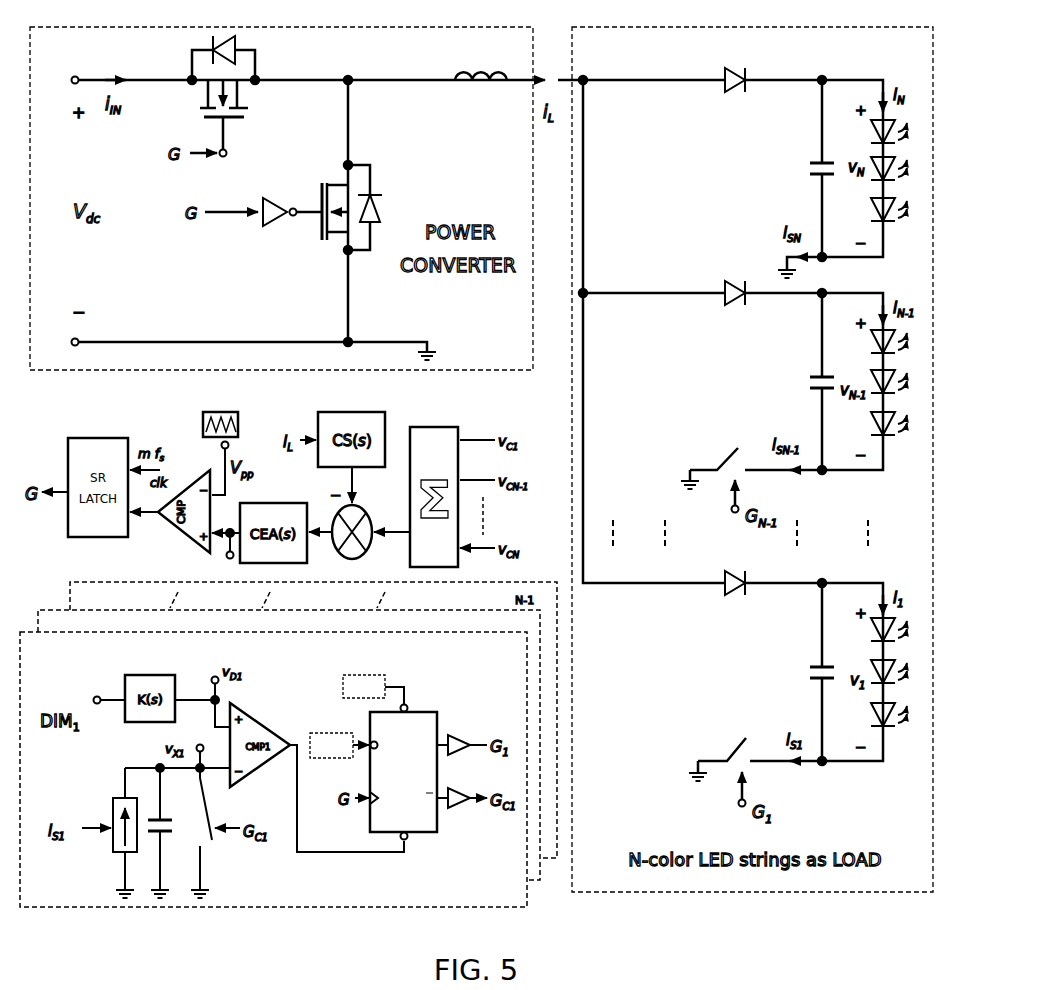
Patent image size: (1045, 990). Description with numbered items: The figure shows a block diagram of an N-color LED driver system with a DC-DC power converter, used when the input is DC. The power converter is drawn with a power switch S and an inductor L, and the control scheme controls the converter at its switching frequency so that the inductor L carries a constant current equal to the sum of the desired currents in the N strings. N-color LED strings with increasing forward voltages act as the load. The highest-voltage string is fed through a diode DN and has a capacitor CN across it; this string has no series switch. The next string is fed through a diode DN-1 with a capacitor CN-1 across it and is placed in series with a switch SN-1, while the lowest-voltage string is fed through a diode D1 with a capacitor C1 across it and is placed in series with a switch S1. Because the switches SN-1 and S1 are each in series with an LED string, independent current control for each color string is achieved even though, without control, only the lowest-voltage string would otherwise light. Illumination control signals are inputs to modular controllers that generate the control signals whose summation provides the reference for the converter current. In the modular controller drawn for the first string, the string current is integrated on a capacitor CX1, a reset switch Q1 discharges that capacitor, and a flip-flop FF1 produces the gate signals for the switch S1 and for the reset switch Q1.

The power switch S is at (213, 96).
The inductor L is at (481, 96).
The diode of Nth LED string DN is at (732, 103).
The capacitor of Nth LED string CN is at (809, 168).
The diode of (N-1)th LED string DN-1 is at (736, 316).
The capacitor of (N-1)th LED string CN-1 is at (802, 381).
The switch S_{N-1} SN-1 is at (716, 463).
The diode of first LED string D1 is at (740, 604).
The capacitor of first LED string C1 is at (810, 672).
The switch S_1 S1 is at (723, 760).
The reset switch of modular controller Q1 is at (215, 833).
The integrating capacitor of modular controller CX1 is at (171, 833).
The flip-flop of modular controller FF1 is at (398, 757).